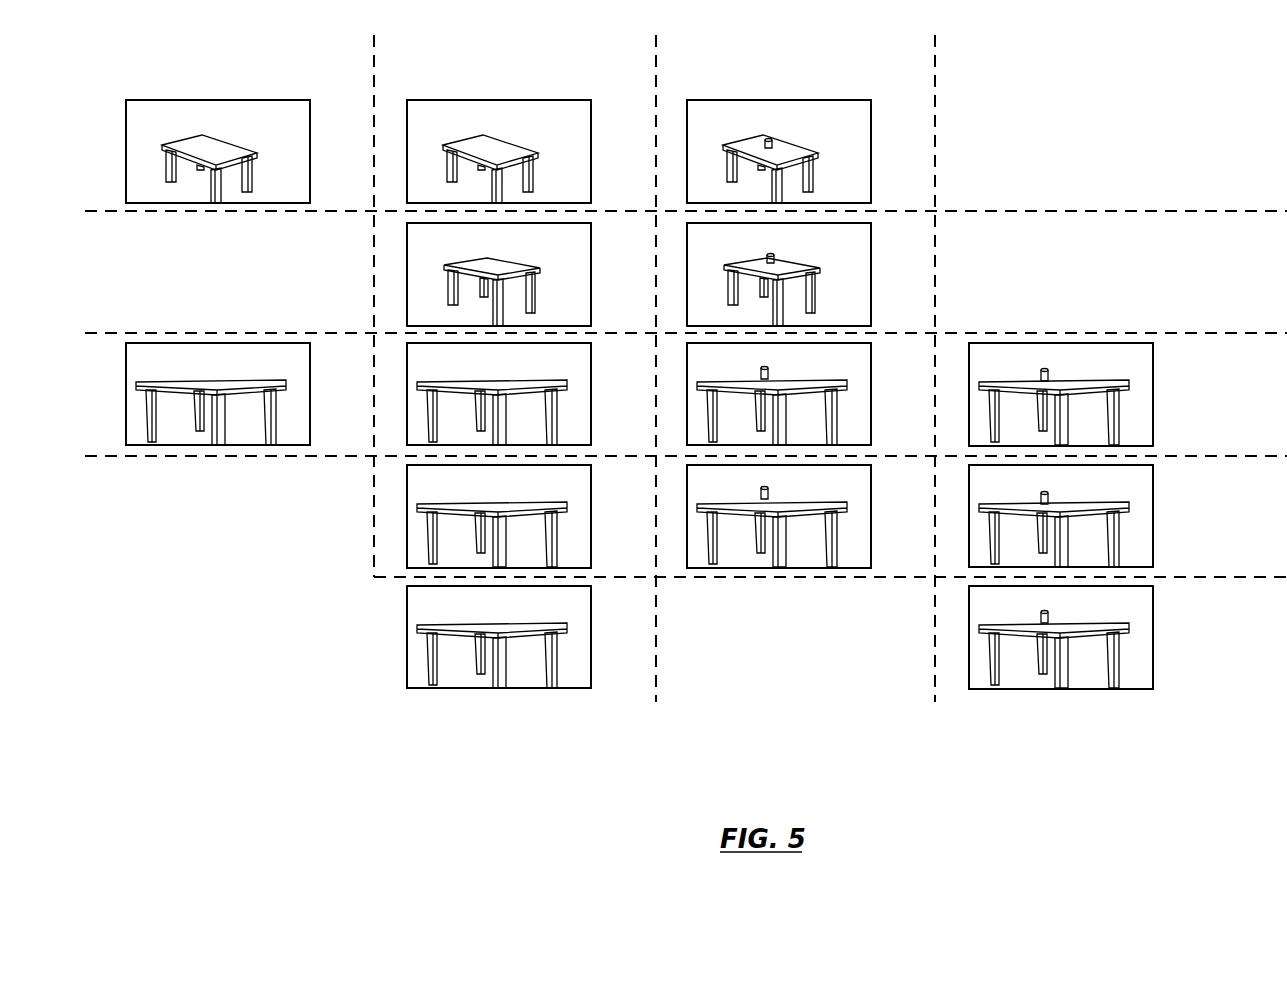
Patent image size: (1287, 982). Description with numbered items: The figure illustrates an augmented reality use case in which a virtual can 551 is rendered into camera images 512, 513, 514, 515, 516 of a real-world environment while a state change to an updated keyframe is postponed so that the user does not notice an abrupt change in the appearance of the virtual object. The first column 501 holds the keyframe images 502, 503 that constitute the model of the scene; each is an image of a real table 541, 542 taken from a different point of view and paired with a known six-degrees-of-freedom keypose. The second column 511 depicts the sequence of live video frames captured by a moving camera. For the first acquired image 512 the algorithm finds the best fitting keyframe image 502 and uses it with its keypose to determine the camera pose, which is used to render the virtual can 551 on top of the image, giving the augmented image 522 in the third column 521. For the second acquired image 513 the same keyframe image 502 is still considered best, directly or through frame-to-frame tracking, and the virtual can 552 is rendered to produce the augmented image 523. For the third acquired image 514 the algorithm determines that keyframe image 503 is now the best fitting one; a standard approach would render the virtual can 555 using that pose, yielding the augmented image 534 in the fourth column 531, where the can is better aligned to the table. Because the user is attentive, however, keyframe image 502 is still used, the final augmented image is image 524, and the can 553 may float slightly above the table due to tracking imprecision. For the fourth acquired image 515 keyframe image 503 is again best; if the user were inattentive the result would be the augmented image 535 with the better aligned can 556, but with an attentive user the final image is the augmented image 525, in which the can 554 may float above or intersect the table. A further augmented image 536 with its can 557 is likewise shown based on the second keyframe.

The keyframe images column 501 is at (300, 53).
The keyframe image 502 is at (247, 151).
The keyframe image 503 is at (247, 394).
The sequence of live video frames 511 is at (587, 53).
The first acquired image 512 is at (593, 143).
The second acquired image 513 is at (593, 263).
The third acquired image 514 is at (593, 402).
The fourth acquired image 515 is at (593, 510).
The camera image 516 is at (593, 636).
The augmented video frames based on keyframe 1 521 is at (862, 55).
The augmented image 522 is at (808, 151).
The augmented image 523 is at (808, 274).
The augmented image 524 is at (808, 394).
The augmented image 525 is at (808, 516).
The augmented video frames based on keyframe 2 531 is at (1144, 55).
The augmented image 534 is at (1090, 394).
The augmented image 535 is at (1090, 516).
The augmented image 536 is at (1090, 637).
The real table 541 is at (227, 140).
The real table 542 is at (225, 380).
The virtual can 551 is at (773, 141).
The virtual can 552 is at (775, 256).
The virtual can 553 is at (770, 368).
The virtual can 554 is at (770, 488).
The virtual can 555 is at (1050, 372).
The virtual can 556 is at (1050, 497).
The virtual can 557 is at (1050, 615).